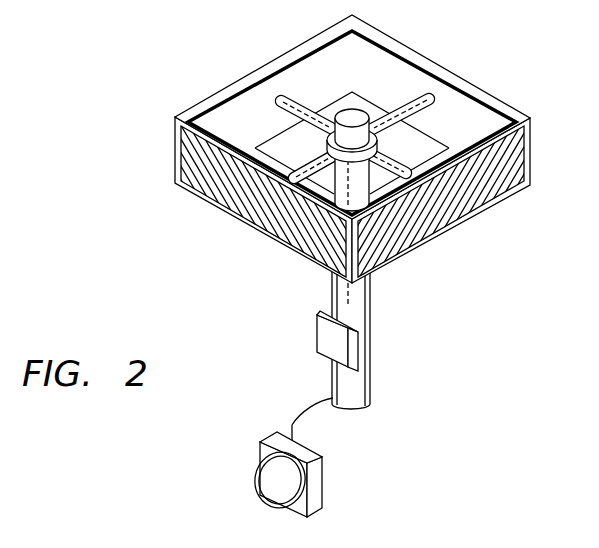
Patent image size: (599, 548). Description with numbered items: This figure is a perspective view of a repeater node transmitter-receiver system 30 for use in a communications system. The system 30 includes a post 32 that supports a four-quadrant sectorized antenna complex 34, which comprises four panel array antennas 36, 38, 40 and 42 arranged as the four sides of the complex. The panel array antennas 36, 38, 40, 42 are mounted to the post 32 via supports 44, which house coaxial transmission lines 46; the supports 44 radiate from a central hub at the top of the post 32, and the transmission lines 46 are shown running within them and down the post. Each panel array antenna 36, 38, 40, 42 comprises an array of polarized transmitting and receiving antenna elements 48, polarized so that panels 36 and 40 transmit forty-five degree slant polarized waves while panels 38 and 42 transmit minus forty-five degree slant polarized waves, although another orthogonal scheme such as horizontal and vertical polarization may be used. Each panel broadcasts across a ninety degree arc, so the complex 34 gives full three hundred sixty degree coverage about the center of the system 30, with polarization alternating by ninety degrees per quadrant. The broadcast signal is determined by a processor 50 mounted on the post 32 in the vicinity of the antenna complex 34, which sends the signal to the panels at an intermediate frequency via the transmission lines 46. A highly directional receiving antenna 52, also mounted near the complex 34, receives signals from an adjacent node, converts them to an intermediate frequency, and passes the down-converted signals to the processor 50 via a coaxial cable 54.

The repeater node transmitter-receiver system 30 is at (188, 276).
The post 32 is at (366, 376).
The four-quadrant sectorized antenna complex 34 is at (518, 117).
The panel array antenna 36 is at (280, 242).
The panel array antenna 38 is at (230, 88).
The panel array antenna 40 is at (416, 64).
The panel array antenna 42 is at (452, 228).
The supports 44 is at (330, 148).
The coaxial transmission lines 46 is at (311, 106).
The polarized transmitting and receiving antenna elements 48 is at (503, 190).
The processor 50 is at (325, 352).
The highly directional receiving antenna 52 is at (280, 497).
The coaxial cable 54 is at (288, 424).